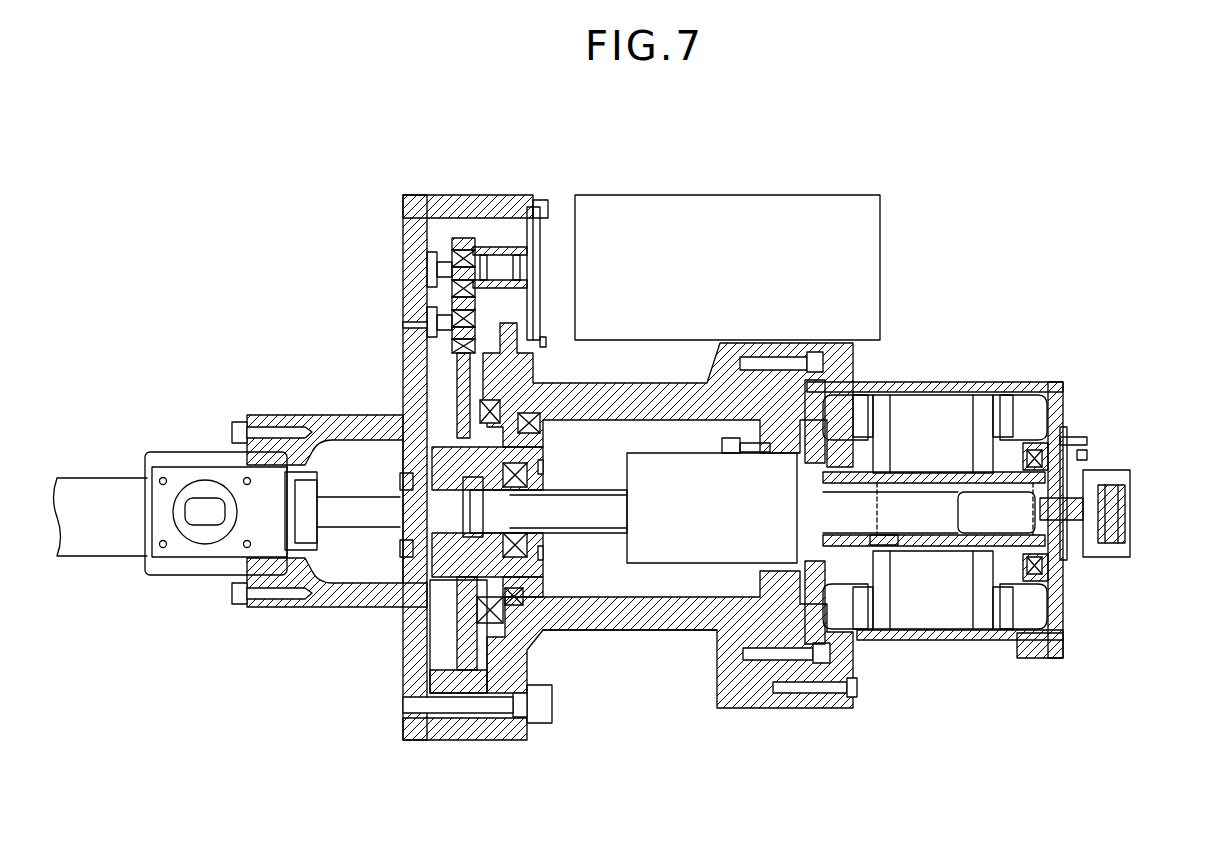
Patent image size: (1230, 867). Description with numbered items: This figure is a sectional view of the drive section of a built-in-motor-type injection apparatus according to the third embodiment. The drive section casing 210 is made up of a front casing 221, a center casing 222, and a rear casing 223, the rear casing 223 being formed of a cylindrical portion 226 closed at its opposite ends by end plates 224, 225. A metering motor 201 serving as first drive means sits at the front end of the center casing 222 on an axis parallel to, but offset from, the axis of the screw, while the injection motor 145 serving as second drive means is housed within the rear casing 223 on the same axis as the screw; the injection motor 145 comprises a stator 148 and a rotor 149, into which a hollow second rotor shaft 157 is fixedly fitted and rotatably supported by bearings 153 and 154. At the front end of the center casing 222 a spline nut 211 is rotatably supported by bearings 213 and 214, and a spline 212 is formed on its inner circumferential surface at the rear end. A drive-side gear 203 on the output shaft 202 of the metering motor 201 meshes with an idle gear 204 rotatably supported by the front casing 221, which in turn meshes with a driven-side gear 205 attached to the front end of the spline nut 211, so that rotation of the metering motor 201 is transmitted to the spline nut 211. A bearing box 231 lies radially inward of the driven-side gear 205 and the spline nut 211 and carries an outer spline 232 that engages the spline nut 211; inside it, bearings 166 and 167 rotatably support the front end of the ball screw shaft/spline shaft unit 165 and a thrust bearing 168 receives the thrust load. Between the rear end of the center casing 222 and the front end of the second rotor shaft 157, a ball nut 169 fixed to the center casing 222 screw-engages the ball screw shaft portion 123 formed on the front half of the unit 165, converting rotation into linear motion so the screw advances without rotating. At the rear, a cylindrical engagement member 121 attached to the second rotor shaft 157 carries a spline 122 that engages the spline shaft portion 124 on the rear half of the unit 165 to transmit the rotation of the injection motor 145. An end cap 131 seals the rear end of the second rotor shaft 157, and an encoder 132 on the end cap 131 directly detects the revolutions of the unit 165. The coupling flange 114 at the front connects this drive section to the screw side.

The coupling flange 114 is at (345, 600).
The engagement member 121 is at (975, 560).
The spline 122 is at (963, 527).
The ball screw shaft portion 123 is at (612, 490).
The spline shaft portion 124 is at (885, 542).
The end cap 131 is at (1068, 530).
The encoder 132 is at (1130, 505).
The injection motor 145 is at (937, 614).
The stator 148 is at (965, 445).
The rotor 149 is at (918, 460).
The bearing 153 is at (853, 437).
The bearing 154 is at (1040, 445).
The second rotor shaft 157 is at (1007, 477).
The ball screw shaft/spline shaft unit 165 is at (559, 525).
The bearing 166 is at (410, 420).
The bearing 167 is at (543, 468).
The thrust bearing 168 is at (543, 540).
The ball nut 169 is at (688, 518).
The metering motor 201 is at (696, 277).
The output shaft 202 is at (514, 272).
The drive-side gear 203 is at (465, 240).
The idle gear 204 is at (450, 333).
The driven-side gear 205 is at (457, 367).
The drive section casing 210 is at (490, 745).
The spline nut 211 is at (527, 640).
The spline 212 is at (545, 597).
The bearing 213 is at (537, 652).
The bearing 214 is at (615, 615).
The front casing 221 is at (363, 610).
The center casing 222 is at (693, 622).
The rear casing 223 is at (895, 662).
The end plate 224 is at (843, 708).
The end plate 225 is at (1050, 655).
The cylindrical portion 226 is at (970, 642).
The bearing box 231 is at (393, 615).
The spline 232 is at (447, 627).